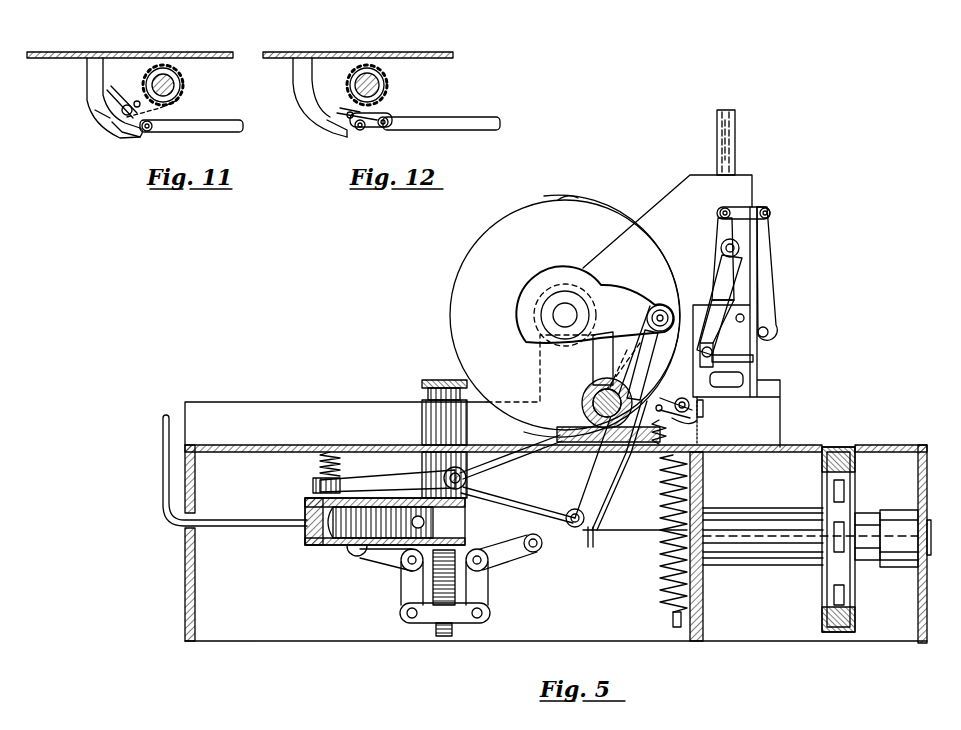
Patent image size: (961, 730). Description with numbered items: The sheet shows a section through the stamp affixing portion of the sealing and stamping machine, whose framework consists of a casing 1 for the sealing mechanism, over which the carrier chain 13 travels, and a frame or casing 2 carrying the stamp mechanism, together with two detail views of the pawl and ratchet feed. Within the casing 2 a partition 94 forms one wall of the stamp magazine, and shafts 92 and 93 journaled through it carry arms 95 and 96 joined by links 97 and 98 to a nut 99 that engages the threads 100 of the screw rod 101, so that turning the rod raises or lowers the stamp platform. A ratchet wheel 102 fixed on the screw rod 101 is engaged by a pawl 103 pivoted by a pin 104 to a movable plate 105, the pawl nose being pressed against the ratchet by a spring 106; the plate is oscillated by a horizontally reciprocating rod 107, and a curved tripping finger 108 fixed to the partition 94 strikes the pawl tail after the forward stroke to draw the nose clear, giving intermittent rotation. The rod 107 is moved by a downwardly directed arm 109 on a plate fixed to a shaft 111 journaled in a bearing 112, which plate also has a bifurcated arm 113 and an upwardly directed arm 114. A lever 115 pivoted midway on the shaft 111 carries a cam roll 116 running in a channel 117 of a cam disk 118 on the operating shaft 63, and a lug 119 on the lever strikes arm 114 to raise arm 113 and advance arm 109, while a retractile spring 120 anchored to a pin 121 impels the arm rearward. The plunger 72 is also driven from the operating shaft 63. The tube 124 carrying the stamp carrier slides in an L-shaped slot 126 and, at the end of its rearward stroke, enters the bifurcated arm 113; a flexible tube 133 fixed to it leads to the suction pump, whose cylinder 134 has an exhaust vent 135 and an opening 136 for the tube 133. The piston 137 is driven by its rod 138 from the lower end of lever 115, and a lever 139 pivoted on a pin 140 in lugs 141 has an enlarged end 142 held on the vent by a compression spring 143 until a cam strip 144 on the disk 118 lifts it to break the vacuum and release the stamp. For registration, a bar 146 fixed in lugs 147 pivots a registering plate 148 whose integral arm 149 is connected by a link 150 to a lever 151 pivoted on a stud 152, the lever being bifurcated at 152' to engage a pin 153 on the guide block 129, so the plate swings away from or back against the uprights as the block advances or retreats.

In FIG. 5, the casing 1 is at (928, 510).
In FIG. 5, the frame or casing 2 is at (185, 552).
In FIG. 5, the sprocket or carrier chain 13 is at (852, 447).
In FIG. 5, the operating shaft 63 is at (560, 313).
In FIG. 5, the plunger 72 is at (736, 120).
In FIG. 5, the shaft 92 is at (360, 553).
In FIG. 5, the shaft 93 is at (543, 548).
In FIG. 11, the partition 94 is at (160, 52).
In FIG. 12, the partition 94 is at (383, 52).
In FIG. 5, the partition 94 is at (309, 403).
In FIG. 5, the arm 95 is at (392, 563).
In FIG. 5, the arm 96 is at (512, 562).
In FIG. 5, the link 97 is at (400, 600).
In FIG. 5, the link 98 is at (489, 590).
In FIG. 5, the nut 99 is at (422, 623).
In FIG. 5, the threads 100 is at (455, 632).
In FIG. 5, the screw rod 101 is at (450, 379).
In FIG. 11, the ratchet wheel 102 is at (183, 83).
In FIG. 12, the ratchet wheel 102 is at (390, 80).
In FIG. 5, the ratchet wheel 102 is at (422, 385).
In FIG. 11, the pawl 103 is at (96, 110).
In FIG. 12, the pawl 103 is at (340, 137).
In FIG. 11, the pin 104 is at (112, 130).
In FIG. 12, the pin 104 is at (360, 131).
In FIG. 11, the movable plate 105 is at (173, 110).
In FIG. 12, the movable plate 105 is at (395, 111).
In FIG. 11, the spring 106 is at (120, 92).
In FIG. 12, the spring 106 is at (350, 108).
In FIG. 11, the horizontally reciprocating rod 107 is at (210, 128).
In FIG. 12, the horizontally reciprocating rod 107 is at (480, 118).
In FIG. 5, the horizontally reciprocating rod 107 is at (722, 528).
In FIG. 11, the curved tripping finger 108 is at (87, 98).
In FIG. 12, the curved tripping finger 108 is at (313, 127).
In FIG. 5, the downwardly directed arm 109 is at (607, 495).
In FIG. 5, the shaft 111 is at (583, 403).
In FIG. 5, the bearing 112 is at (588, 435).
In FIG. 5, the forwardly projecting bifurcated arm 113 is at (690, 423).
In FIG. 5, the upwardly directed arm 114 is at (596, 368).
In FIG. 5, the lever 115 is at (645, 326).
In FIG. 5, the cam roll 116 is at (655, 302).
In FIG. 5, the channel 117 is at (557, 273).
In FIG. 5, the cam disk 118 is at (497, 231).
In FIG. 5, the lug 119 is at (627, 366).
In FIG. 5, the retractile spring 120 is at (663, 555).
In FIG. 5, the pin 121 is at (673, 622).
In FIG. 5, the metallic tube 124 is at (704, 408).
In FIG. 5, the L-shaped slot 126 is at (757, 380).
In FIG. 5, the guide block 129 is at (754, 358).
In FIG. 5, the flexible tube 133 is at (162, 462).
In FIG. 5, the cylinder 134 is at (330, 546).
In FIG. 5, the exhaust vent 135 is at (310, 500).
In FIG. 5, the opening 136 is at (305, 530).
In FIG. 5, the piston 137 is at (428, 522).
In FIG. 5, the rod 138 is at (522, 516).
In FIG. 5, the lever 139 is at (493, 462).
In FIG. 5, the pin 140 is at (467, 481).
In FIG. 5, the lugs 141 is at (468, 492).
In FIG. 5, the enlarged end 142 is at (318, 480).
In FIG. 5, the compression spring 143 is at (341, 463).
In FIG. 5, the cam strip 144 is at (574, 198).
In FIG. 5, the bar 146 is at (768, 332).
In FIG. 5, the lugs 147 is at (717, 352).
In FIG. 5, the registering plate 148 is at (781, 393).
In FIG. 5, the integral arm 149 is at (776, 250).
In FIG. 5, the link 150 is at (753, 207).
In FIG. 5, the lever 151 is at (717, 233).
In FIG. 5, the stud 152 is at (765, 233).
In FIG. 5, the bifurcated lower end 152' is at (761, 311).
In FIG. 5, the pin 153 is at (713, 370).